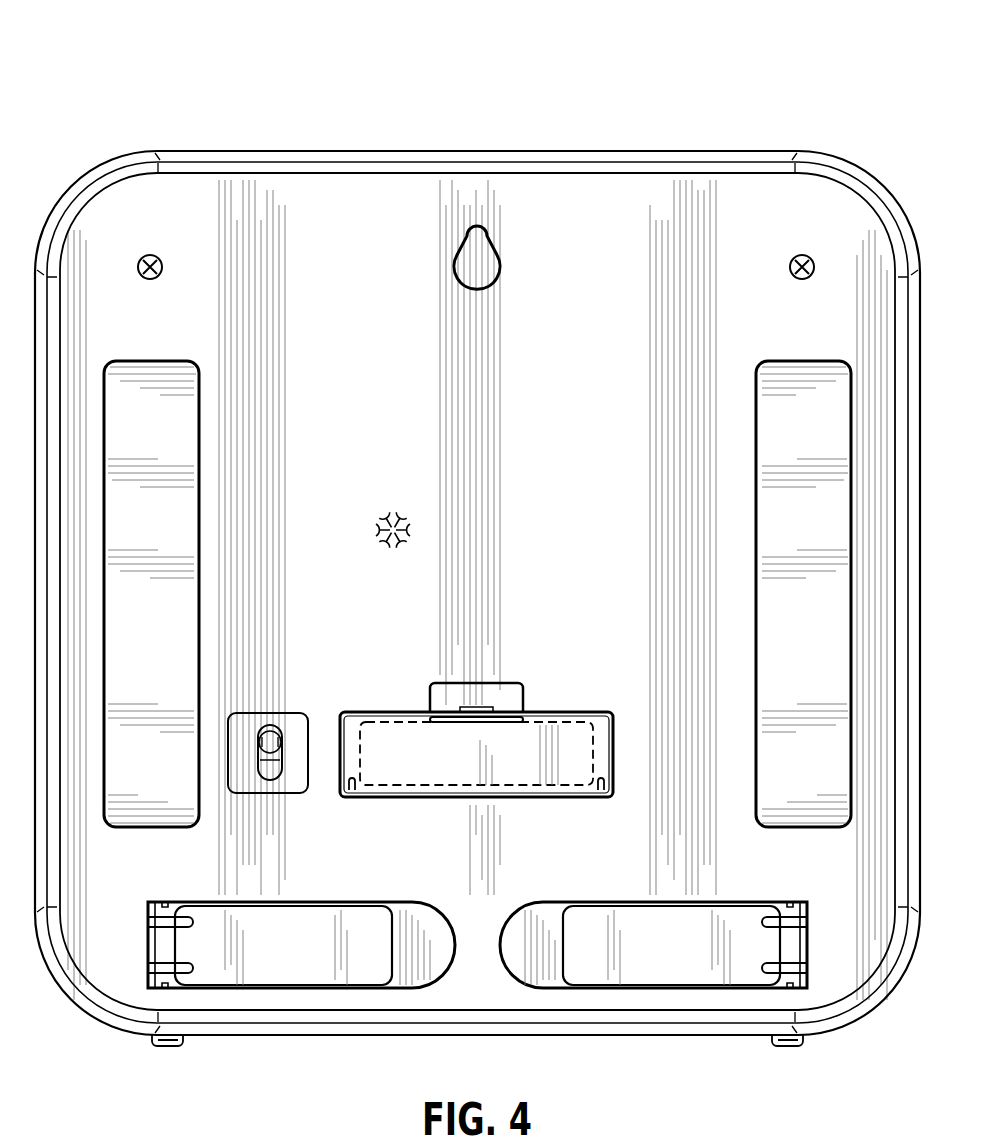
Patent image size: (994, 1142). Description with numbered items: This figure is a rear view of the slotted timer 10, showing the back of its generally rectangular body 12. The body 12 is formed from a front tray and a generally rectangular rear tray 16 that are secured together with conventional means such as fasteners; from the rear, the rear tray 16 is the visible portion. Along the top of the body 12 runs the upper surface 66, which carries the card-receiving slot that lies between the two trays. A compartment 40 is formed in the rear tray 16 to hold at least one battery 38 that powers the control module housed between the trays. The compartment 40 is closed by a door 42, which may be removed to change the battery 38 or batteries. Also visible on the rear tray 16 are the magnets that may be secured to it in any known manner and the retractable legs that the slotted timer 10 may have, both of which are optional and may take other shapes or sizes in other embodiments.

The slotted timer 10 is at (64, 49).
The generally rectangular body 12 is at (790, 142).
The generally rectangular rear tray 16 is at (157, 150).
The upper surface 66 is at (221, 157).
The battery 38 is at (378, 722).
The compartment 40 is at (557, 711).
The door 42 is at (603, 717).